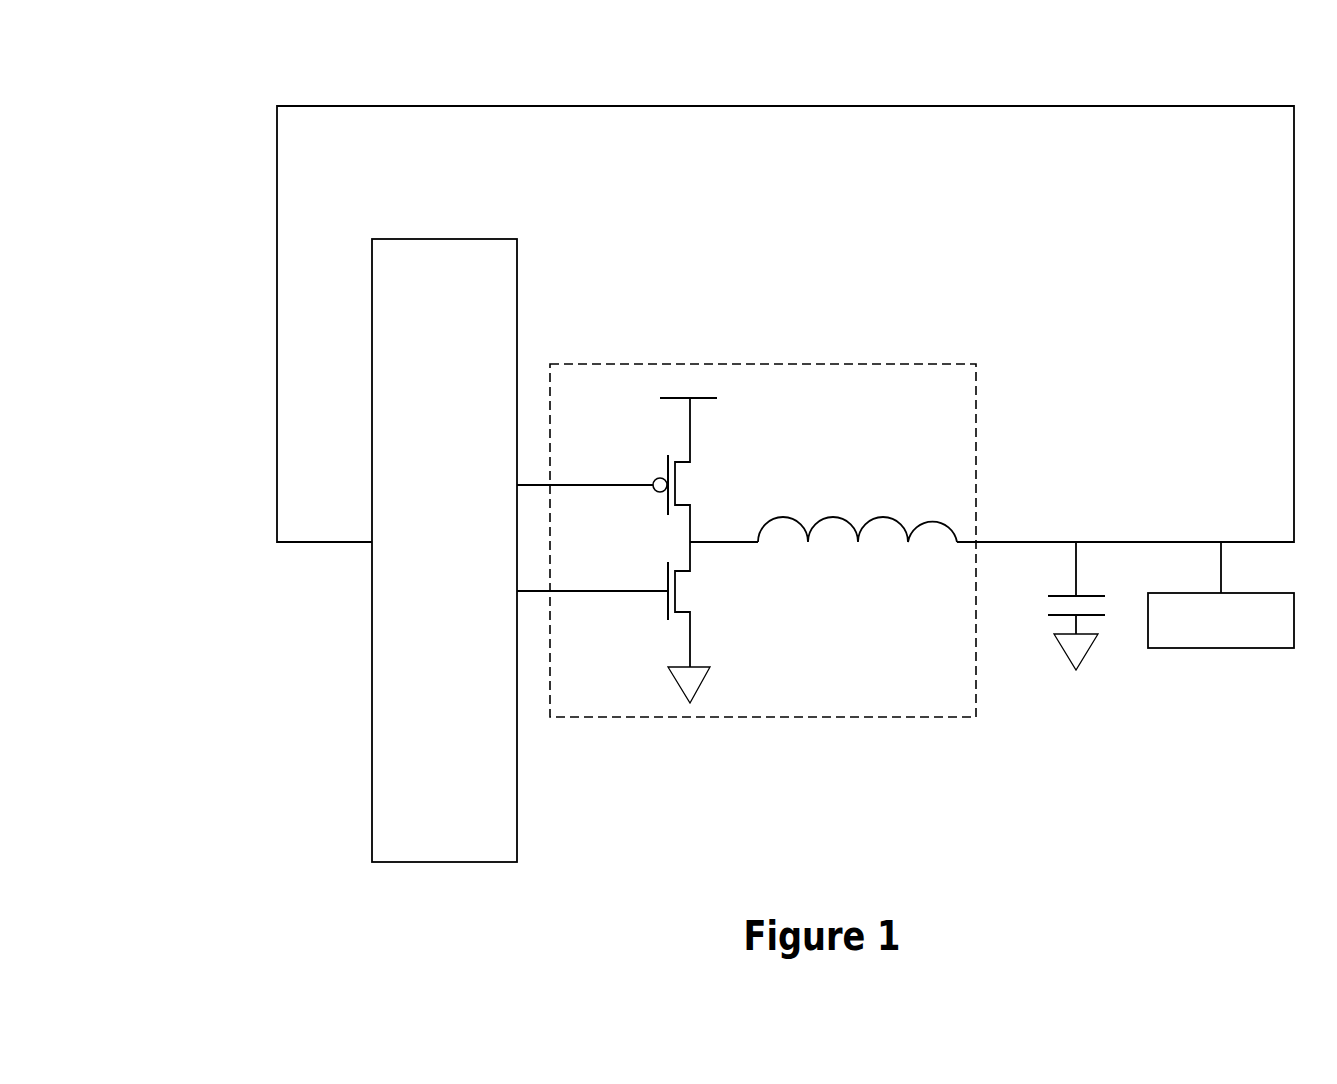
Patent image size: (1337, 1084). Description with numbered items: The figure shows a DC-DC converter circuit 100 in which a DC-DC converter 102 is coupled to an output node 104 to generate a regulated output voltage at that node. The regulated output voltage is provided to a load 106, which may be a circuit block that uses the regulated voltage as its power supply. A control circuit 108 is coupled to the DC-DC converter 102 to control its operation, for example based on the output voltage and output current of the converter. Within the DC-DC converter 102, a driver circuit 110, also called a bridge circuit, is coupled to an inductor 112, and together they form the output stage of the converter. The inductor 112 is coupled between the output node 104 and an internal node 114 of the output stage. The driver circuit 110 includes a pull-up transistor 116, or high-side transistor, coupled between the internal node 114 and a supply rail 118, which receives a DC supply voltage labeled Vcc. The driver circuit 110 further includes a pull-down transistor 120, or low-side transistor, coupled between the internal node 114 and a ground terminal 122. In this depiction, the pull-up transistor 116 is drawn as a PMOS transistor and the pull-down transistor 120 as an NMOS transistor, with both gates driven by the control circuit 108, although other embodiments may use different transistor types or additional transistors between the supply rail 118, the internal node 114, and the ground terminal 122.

The DC-DC converter circuit 100 is at (195, 98).
The DC-DC converter 102 is at (976, 432).
The output node 104 is at (1058, 540).
The load 106 is at (1221, 595).
The control circuit 108 is at (520, 550).
The driver circuit 110 is at (648, 435).
The inductor 112 is at (830, 518).
The internal node 114 is at (692, 547).
The pull-up transistor 116 is at (657, 500).
The supply rail 118 is at (692, 400).
The pull-down transistor 120 is at (657, 607).
The ground terminal 122 is at (703, 682).